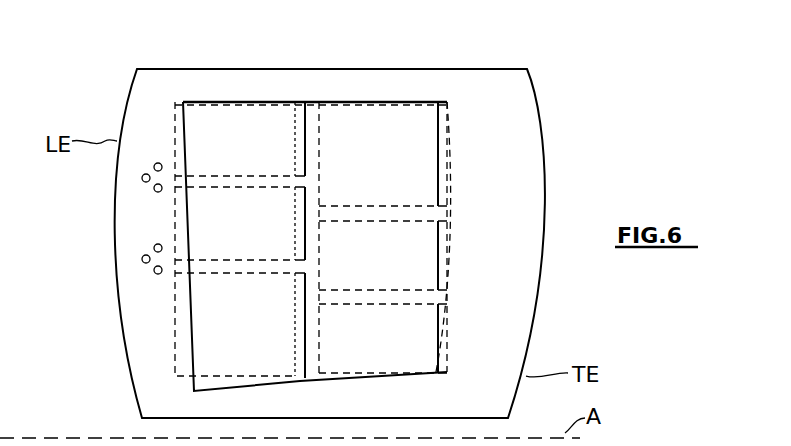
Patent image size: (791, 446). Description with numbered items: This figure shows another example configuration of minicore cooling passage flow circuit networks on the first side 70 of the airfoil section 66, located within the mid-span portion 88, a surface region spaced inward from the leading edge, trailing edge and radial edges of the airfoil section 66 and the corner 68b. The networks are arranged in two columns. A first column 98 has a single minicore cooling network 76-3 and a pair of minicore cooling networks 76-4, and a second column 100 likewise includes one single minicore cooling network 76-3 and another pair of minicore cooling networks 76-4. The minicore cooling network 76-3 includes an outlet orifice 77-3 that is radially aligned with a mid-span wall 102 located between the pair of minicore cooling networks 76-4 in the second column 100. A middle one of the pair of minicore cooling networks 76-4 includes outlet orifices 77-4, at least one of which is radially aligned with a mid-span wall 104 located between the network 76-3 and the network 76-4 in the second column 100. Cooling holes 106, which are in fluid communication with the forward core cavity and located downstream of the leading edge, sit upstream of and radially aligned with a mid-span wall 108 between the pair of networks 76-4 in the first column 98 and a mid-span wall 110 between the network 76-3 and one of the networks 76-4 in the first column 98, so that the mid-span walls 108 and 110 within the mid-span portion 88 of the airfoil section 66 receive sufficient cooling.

The airfoil section 66 is at (557, 84).
The first column 98 is at (253, 93).
The second column 100 is at (392, 93).
The pair of minicore cooling networks 76-4 is at (172, 112).
The single minicore cooling network 76-3 is at (451, 193).
The outlet orifices 77-4 is at (295, 143).
The outlet orifice 77-3 is at (438, 163).
The cooling holes 106 is at (153, 189).
The mid-span wall 108 is at (205, 180).
The mid-span wall 110 is at (205, 265).
The mid-span wall 104 is at (443, 214).
The mid-span wall 102 is at (440, 298).
The mid-span portion 88 is at (190, 387).
The first side 70 is at (170, 404).
The trailing edge corner 68b is at (508, 418).